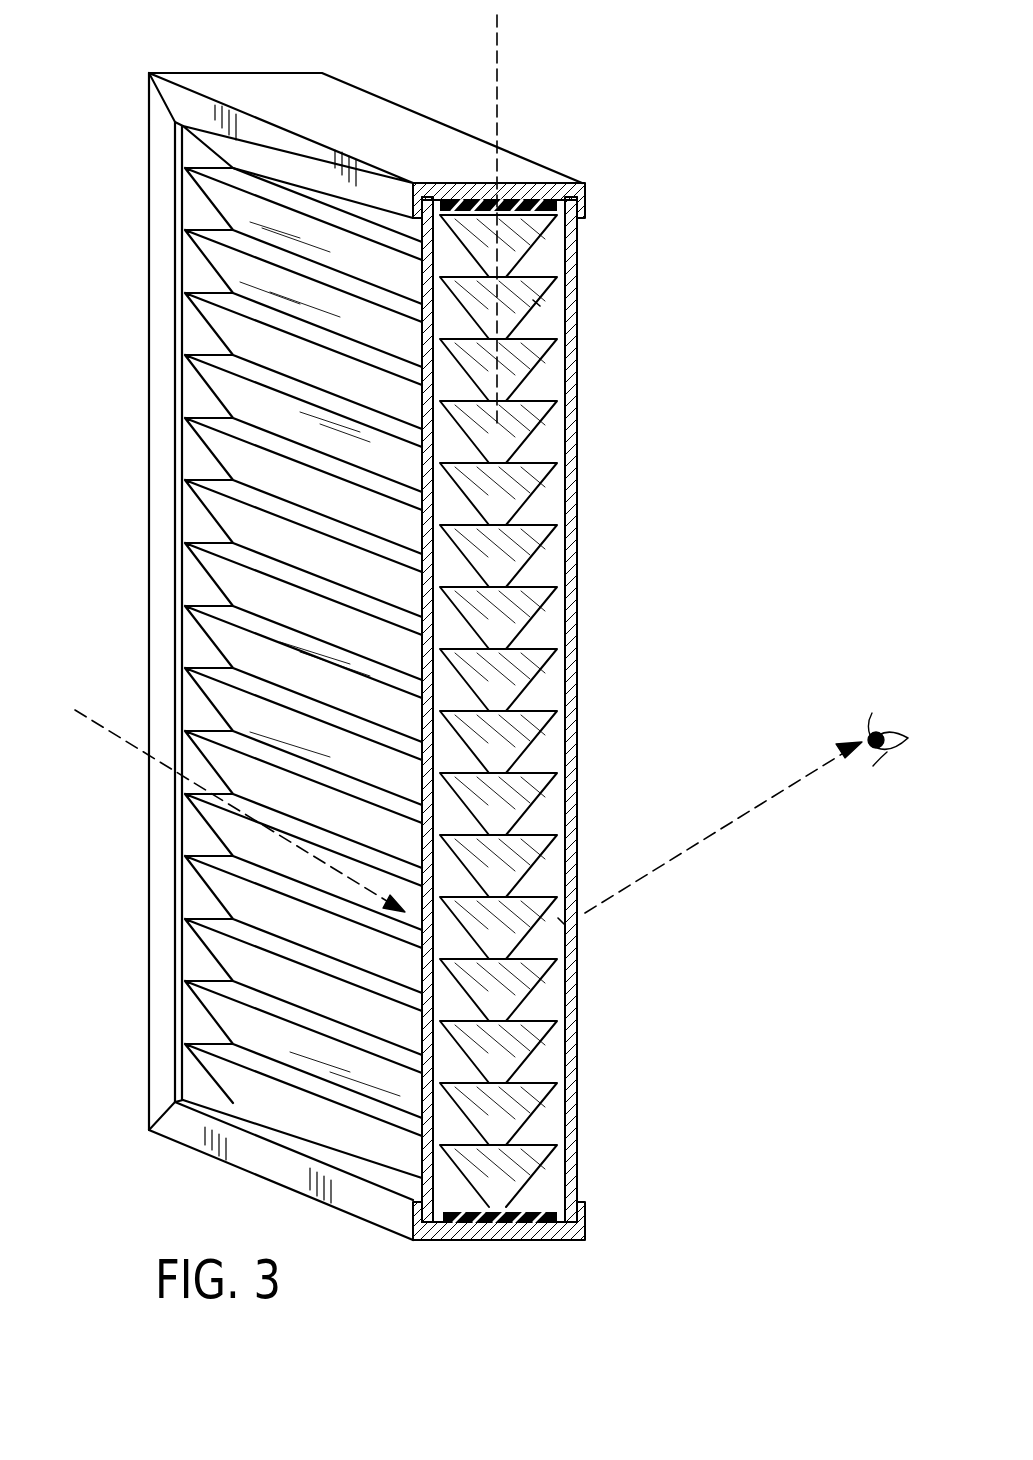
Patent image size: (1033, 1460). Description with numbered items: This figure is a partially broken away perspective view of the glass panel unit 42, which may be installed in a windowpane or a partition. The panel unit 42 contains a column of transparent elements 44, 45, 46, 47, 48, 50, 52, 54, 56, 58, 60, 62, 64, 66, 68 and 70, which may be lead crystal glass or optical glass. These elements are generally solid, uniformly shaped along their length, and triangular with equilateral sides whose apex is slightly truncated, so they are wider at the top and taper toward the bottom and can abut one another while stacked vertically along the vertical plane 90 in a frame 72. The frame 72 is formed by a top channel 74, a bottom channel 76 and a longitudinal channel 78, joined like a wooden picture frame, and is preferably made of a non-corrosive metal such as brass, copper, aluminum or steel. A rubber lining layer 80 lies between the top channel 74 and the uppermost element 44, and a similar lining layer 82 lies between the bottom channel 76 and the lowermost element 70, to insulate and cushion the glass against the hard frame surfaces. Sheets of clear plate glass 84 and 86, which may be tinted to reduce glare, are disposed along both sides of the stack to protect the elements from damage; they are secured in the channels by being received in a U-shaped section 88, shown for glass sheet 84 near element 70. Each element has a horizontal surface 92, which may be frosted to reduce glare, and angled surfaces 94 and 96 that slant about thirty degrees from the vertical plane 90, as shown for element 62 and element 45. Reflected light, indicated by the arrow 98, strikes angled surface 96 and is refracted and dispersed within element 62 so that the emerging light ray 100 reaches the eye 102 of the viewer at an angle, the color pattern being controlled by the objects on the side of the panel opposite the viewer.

The panel unit 42 is at (559, 652).
The transparent element 44 is at (523, 232).
The transparent element 45 is at (535, 283).
The transparent element 46 is at (530, 353).
The transparent element 47 is at (523, 417).
The transparent element 48 is at (540, 478).
The transparent element 50 is at (533, 547).
The transparent element 52 is at (527, 607).
The transparent element 54 is at (545, 672).
The transparent element 56 is at (530, 731).
The transparent element 58 is at (545, 795).
The transparent element 60 is at (560, 855).
The transparent element 62 is at (545, 958).
The transparent element 64 is at (548, 1005).
The transparent element 66 is at (548, 1063).
The transparent element 68 is at (548, 1122).
The transparent element 70 is at (513, 1168).
The frame 72 is at (348, 630).
The top channel 74 is at (508, 148).
The bottom channel 76 is at (305, 1185).
The longitudinal channel 78 is at (150, 475).
The lining layer 80 is at (523, 200).
The lining layer 82 is at (500, 1225).
The clear plate glass sheet 84 is at (572, 575).
The clear plate glass sheet 86 is at (422, 1165).
The U-shaped section 88 is at (585, 1215).
The vertical plane 90 is at (498, 76).
The horizontal surface 92 is at (560, 875).
The angled surface 94 is at (533, 303).
The angled surface 96 is at (303, 853).
The reflected light 98 is at (128, 740).
The emerging light ray 100 is at (740, 820).
The eye 102 is at (892, 748).